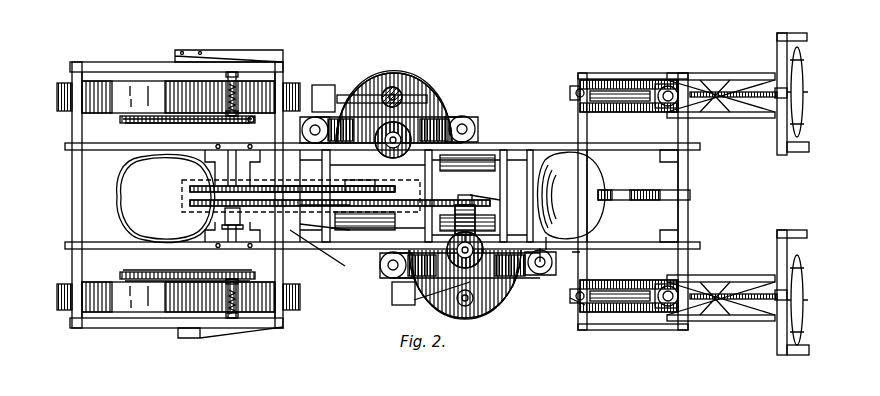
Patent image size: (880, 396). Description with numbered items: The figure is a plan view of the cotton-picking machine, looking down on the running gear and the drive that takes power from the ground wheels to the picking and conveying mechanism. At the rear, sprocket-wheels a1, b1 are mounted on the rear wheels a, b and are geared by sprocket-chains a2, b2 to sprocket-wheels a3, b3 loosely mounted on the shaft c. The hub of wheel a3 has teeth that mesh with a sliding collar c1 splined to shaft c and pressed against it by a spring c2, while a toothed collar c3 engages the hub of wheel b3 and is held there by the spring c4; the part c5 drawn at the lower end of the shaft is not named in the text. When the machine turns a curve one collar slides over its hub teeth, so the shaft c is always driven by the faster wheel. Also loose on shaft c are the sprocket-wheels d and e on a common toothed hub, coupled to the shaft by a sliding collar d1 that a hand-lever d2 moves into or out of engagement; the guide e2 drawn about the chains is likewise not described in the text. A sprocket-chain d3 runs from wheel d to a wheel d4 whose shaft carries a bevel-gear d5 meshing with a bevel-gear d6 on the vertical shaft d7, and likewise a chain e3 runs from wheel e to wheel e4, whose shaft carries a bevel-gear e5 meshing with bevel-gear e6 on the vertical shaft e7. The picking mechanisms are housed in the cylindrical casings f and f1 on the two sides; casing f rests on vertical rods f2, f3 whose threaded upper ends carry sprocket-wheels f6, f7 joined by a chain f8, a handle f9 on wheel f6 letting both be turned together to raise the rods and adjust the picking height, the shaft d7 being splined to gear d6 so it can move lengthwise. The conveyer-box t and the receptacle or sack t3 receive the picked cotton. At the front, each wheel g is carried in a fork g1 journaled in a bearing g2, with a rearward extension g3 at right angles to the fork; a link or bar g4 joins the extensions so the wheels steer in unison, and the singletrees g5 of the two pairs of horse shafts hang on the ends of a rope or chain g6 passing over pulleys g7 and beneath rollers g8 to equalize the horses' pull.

The rear wheel a is at (82, 310).
The sprocket-wheel a1 is at (125, 274).
The sprocket-chain a2 is at (172, 273).
The sprocket-wheel a3 is at (242, 276).
The rear wheel b is at (57, 94).
The sprocket-wheel b1 is at (128, 123).
The sprocket-chain b2 is at (165, 123).
The sprocket-wheel b3 is at (252, 123).
The shaft c is at (231, 70).
The sliding collar c1 is at (286, 268).
The spring c2 is at (230, 316).
The toothed collar c3 is at (228, 100).
The spring c4 is at (240, 80).
The lower screw head c5 is at (238, 310).
The conveyer-box t is at (322, 85).
The receptacle or sack t3 is at (151, 198).
The sprocket-wheel e is at (190, 188).
The chain guide e2 is at (210, 176).
The chain e3 is at (330, 186).
The wheel e4 is at (370, 184).
The bevel-gear e5 is at (420, 118).
The bevel-gear e6 is at (402, 128).
The vertical shaft e7 is at (375, 108).
The sprocket-wheel d is at (190, 203).
The sliding collar d1 is at (225, 216).
The hand-lever d2 is at (320, 234).
The sprocket-chain d3 is at (410, 235).
The wheel d4 is at (500, 198).
The bevel-gear d5 is at (492, 290).
The bevel-gear d6 is at (482, 292).
The vertical shaft d7 is at (420, 300).
The cylindrical casing f is at (518, 268).
The cylindrical casing f1 is at (468, 118).
The vertical rod f2 is at (553, 262).
The vertical rod f3 is at (394, 290).
The sprocket-wheel f6 is at (545, 250).
The sprocket-wheel f7 is at (383, 272).
The chain f8 is at (403, 293).
The handle f9 is at (572, 302).
The front wheel g is at (632, 104).
The fork g1 is at (665, 110).
The bearing g2 is at (588, 238).
The extension g3 is at (610, 104).
The link or bar g4 is at (578, 92).
The singletree g5 is at (790, 118).
The rope or chain g6 is at (700, 197).
The pulley g7 is at (700, 100).
The roller g8 is at (778, 88).